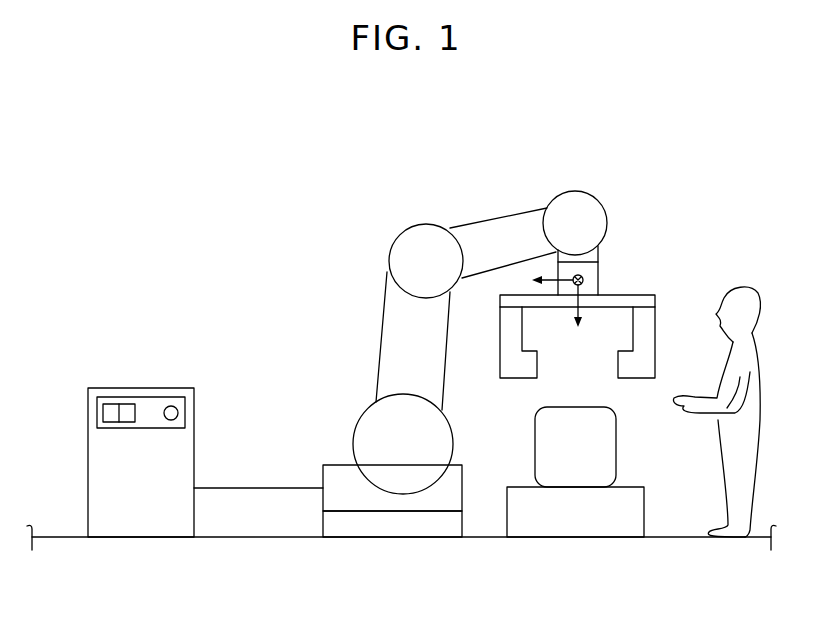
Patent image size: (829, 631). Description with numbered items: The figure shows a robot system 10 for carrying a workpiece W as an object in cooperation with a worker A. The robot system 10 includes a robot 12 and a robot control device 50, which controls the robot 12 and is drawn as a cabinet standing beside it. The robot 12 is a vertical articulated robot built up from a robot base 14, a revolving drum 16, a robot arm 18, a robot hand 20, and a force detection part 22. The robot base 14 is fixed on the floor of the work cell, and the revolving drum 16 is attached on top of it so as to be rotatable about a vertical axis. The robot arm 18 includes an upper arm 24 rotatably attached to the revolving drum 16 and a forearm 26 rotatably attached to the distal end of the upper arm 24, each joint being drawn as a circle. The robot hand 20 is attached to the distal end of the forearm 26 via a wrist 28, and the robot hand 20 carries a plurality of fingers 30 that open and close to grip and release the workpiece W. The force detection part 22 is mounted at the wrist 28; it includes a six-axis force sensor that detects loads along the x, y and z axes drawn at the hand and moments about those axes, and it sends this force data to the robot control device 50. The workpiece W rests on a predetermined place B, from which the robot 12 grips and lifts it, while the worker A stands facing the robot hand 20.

The robot system 10 is at (200, 138).
The robot 12 is at (344, 158).
The robot base 14 is at (340, 523).
The revolving drum 16 is at (335, 472).
The robot arm 18 is at (374, 288).
The robot hand 20 is at (642, 278).
The force detection part 22 is at (600, 273).
The upper arm 24 is at (392, 343).
The forearm 26 is at (500, 230).
The wrist 28 is at (622, 223).
The fingers 30 is at (502, 330).
The robot control device 50 is at (98, 388).
The worker A is at (760, 297).
The predetermined place B is at (532, 525).
The workpiece W is at (597, 460).